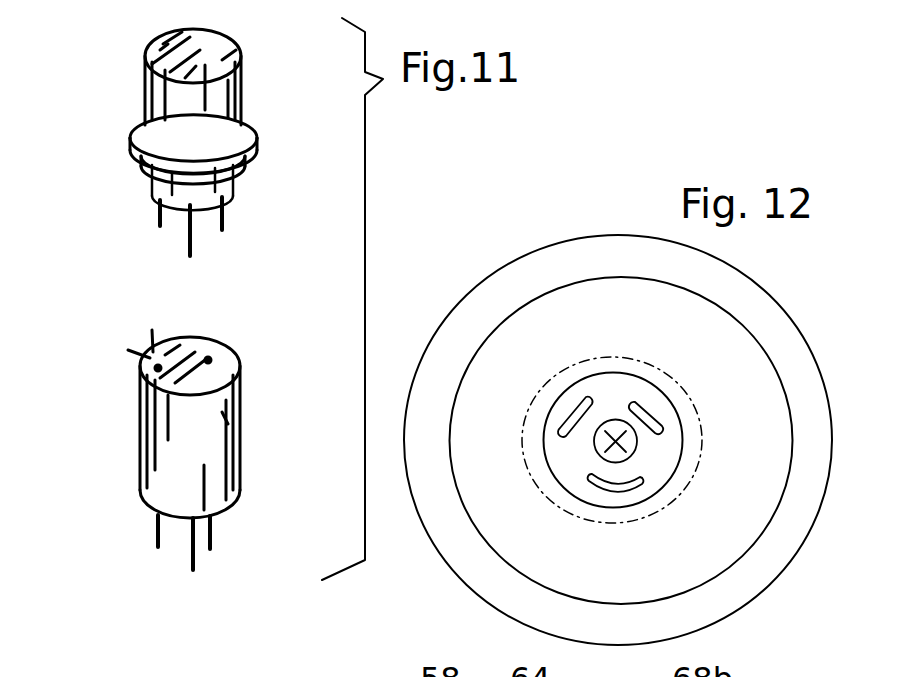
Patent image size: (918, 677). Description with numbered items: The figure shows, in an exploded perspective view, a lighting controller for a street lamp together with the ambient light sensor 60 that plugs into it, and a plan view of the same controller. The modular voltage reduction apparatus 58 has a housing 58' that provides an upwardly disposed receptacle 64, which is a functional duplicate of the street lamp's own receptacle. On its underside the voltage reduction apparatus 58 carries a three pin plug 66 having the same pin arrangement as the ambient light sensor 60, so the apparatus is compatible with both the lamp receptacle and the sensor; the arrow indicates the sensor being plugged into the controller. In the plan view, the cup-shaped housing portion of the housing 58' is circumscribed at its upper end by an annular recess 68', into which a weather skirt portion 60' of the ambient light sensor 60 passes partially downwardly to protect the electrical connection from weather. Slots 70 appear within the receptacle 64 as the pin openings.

In FIG. 11, the modular voltage reduction apparatus 58 is at (239, 453).
In FIG. 12, the modular voltage reduction apparatus 58 is at (411, 612).
In FIG. 11, the housing 58' is at (282, 386).
In FIG. 11, the ambient light sensor 60 is at (140, 149).
In FIG. 11, the weather skirt portion 60' is at (224, 177).
In FIG. 11, the receptacle 64 is at (154, 357).
In FIG. 12, the receptacle 64 is at (611, 346).
In FIG. 11, the three pin plug 66 is at (138, 528).
In FIG. 12, the annular recess 68' is at (636, 440).
In FIG. 12, the slots 70 is at (573, 412).